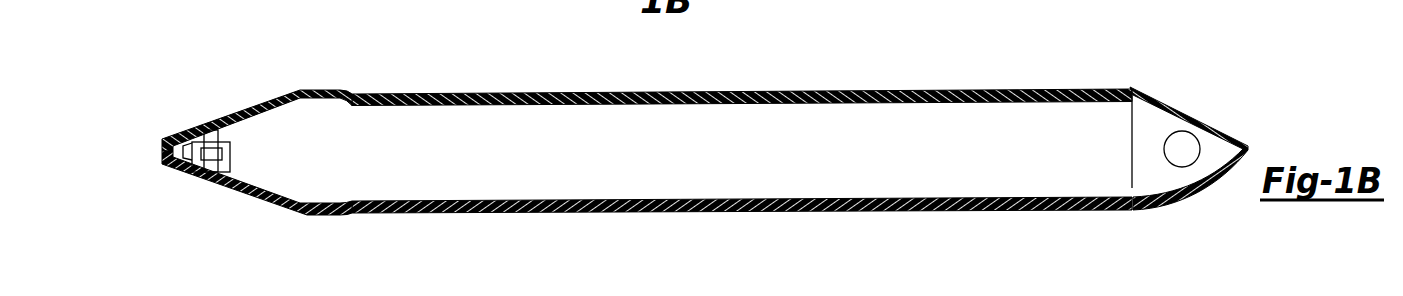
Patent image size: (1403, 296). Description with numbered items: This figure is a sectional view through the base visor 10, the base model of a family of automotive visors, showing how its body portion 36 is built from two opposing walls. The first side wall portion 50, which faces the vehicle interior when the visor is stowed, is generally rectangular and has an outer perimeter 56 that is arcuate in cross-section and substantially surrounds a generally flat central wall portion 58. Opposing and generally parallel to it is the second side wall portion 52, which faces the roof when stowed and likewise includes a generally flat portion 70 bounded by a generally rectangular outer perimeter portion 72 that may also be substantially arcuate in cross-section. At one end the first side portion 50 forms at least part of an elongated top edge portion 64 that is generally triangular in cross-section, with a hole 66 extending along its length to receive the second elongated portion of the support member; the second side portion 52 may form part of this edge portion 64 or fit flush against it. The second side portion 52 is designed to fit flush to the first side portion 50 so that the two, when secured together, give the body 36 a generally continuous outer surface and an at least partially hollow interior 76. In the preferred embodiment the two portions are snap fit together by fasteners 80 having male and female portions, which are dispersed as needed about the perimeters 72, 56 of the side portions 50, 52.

The base visor 10 is at (708, 135).
The body portion 36 is at (742, 60).
The first side wall portion 50 is at (742, 232).
The second side wall portion 52 is at (742, 60).
The outer perimeter 56 is at (260, 199).
The central wall portion 58 is at (837, 213).
The elongated top edge portion 64 is at (1216, 137).
The hole 66 is at (1178, 148).
The flat portion 70 is at (772, 93).
The outer perimeter portion 72 is at (708, 95).
The hollow interior 76 is at (1035, 127).
The fasteners 80 is at (239, 160).